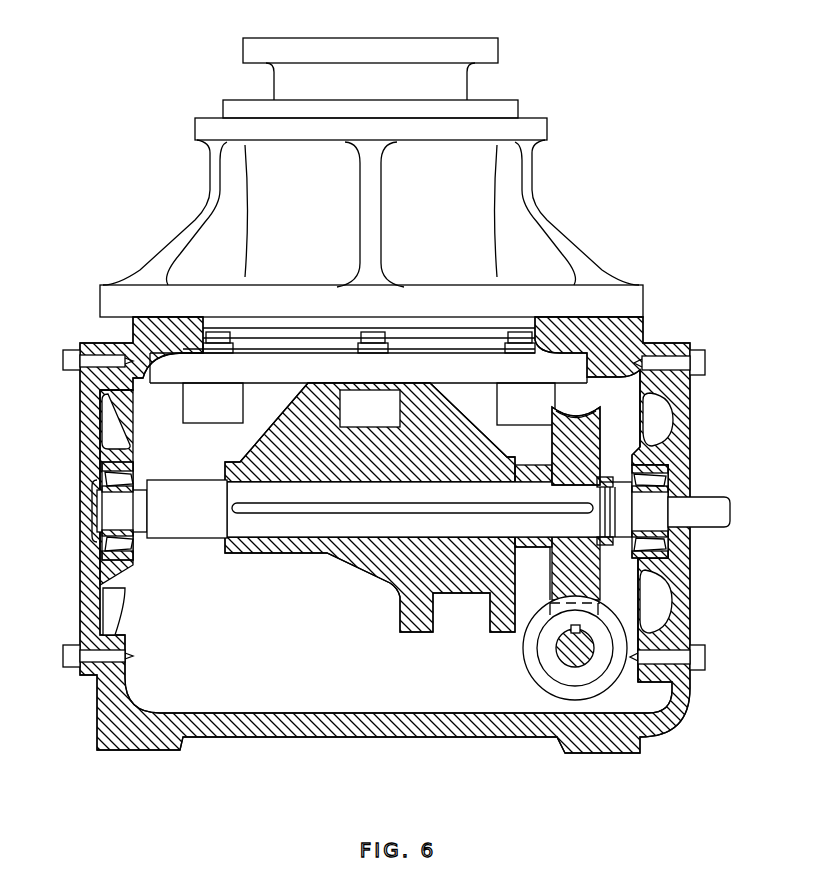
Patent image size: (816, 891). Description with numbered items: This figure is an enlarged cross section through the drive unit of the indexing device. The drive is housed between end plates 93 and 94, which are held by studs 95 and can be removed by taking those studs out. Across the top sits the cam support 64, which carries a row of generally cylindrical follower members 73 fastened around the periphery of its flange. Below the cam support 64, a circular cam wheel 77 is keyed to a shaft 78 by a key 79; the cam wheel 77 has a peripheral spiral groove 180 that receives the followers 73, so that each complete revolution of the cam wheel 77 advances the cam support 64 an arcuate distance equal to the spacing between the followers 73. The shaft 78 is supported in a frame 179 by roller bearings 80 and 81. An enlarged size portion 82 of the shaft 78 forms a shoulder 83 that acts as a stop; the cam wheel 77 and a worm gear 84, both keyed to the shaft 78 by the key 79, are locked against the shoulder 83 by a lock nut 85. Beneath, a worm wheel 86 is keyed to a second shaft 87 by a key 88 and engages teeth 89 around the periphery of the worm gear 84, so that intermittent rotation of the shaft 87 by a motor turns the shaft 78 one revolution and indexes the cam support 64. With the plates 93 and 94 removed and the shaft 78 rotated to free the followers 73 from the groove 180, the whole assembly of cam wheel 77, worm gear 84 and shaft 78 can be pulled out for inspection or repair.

The cam support 64 is at (358, 378).
The follower members 73 is at (356, 418).
The cam wheel 77 is at (302, 550).
The shaft 78 is at (695, 505).
The key 79 is at (483, 513).
The roller bearing 80 is at (130, 547).
The roller bearing 81 is at (637, 550).
The enlarged size portion 82 is at (208, 542).
The shoulder 83 is at (220, 477).
The worm gear 84 is at (599, 444).
The lock nut 85 is at (607, 482).
The worm wheel 86 is at (533, 663).
The shaft 87 is at (567, 653).
The key 88 is at (583, 628).
The teeth 89 is at (567, 425).
The end plate 93 is at (683, 442).
The end plate 94 is at (83, 457).
The studs 95 is at (73, 365).
The frame 179 is at (682, 582).
The spiral groove 180 is at (403, 410).